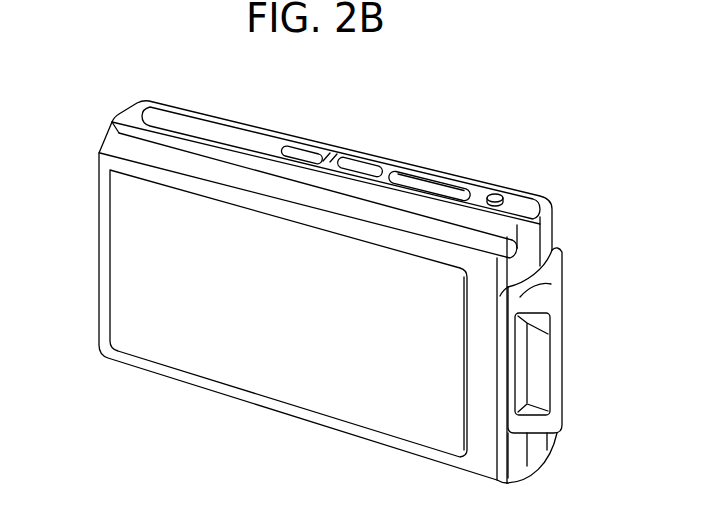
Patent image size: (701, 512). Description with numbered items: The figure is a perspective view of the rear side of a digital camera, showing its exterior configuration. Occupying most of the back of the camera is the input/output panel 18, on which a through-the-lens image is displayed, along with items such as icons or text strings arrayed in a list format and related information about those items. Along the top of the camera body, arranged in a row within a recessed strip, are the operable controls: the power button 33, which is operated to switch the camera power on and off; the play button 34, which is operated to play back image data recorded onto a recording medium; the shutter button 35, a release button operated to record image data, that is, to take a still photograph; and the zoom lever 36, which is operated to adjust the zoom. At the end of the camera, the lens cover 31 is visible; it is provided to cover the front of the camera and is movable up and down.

The input/output panel 18 is at (177, 312).
The lens cover 31 is at (566, 288).
The power button 33 is at (311, 146).
The play button 34 is at (361, 165).
The shutter button 35 is at (430, 172).
The zoom lever 36 is at (493, 196).